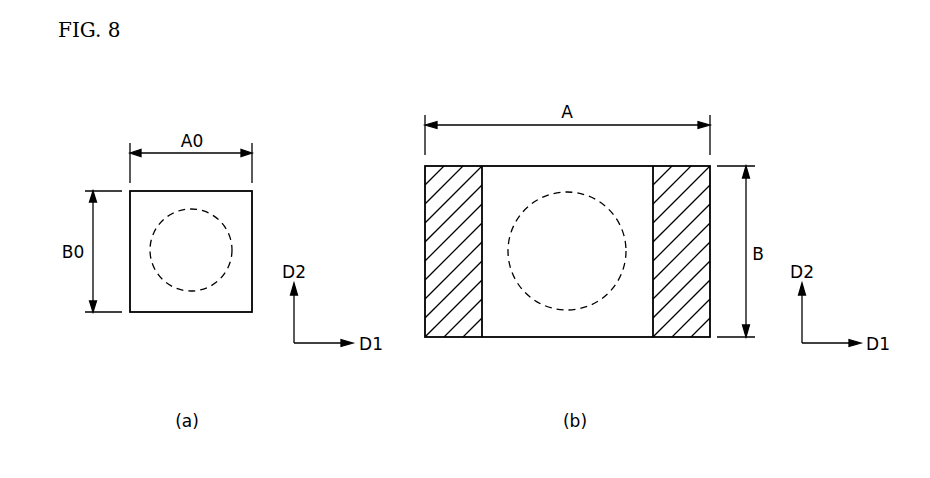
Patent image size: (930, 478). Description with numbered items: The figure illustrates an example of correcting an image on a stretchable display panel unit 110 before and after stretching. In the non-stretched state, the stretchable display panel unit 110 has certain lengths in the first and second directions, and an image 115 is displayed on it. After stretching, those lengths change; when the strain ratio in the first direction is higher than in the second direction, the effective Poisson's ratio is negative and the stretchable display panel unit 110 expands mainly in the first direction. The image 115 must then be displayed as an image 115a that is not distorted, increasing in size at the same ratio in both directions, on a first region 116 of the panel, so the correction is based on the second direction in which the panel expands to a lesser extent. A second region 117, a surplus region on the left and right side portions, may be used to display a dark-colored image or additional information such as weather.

The stretchable display panel unit 110 is at (153, 312).
The image 115 is at (222, 224).
The image 115a is at (602, 299).
The first region 116 is at (565, 327).
The second region 117 is at (437, 227).